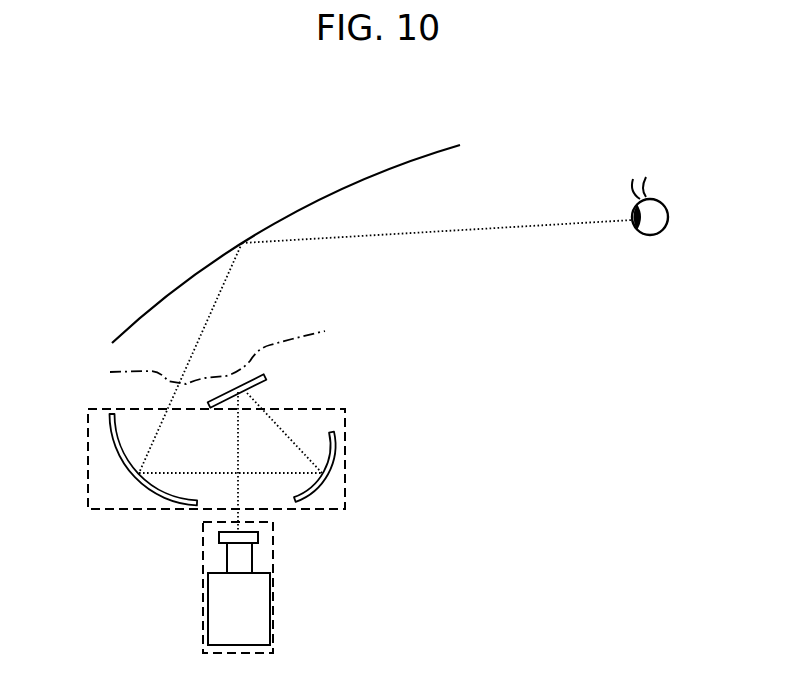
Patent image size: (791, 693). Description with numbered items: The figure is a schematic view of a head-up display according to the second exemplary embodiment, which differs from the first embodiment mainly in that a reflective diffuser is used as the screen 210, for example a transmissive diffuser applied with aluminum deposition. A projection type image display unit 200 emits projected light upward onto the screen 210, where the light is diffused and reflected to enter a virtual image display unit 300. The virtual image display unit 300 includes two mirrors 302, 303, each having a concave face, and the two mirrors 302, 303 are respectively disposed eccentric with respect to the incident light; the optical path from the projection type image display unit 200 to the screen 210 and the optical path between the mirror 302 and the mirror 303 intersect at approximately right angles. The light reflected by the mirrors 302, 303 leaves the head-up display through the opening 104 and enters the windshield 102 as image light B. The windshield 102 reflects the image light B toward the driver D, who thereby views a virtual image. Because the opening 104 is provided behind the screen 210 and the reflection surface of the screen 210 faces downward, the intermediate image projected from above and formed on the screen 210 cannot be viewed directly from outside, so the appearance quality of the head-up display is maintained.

The windshield 102 is at (340, 190).
The opening 104 is at (222, 375).
The screen 210 is at (265, 376).
The virtual image display unit 300 is at (333, 408).
The mirror 302 is at (335, 450).
The mirror 303 is at (115, 453).
The projection type image display unit 200 is at (273, 607).
The image light B is at (224, 284).
The driver D is at (663, 200).